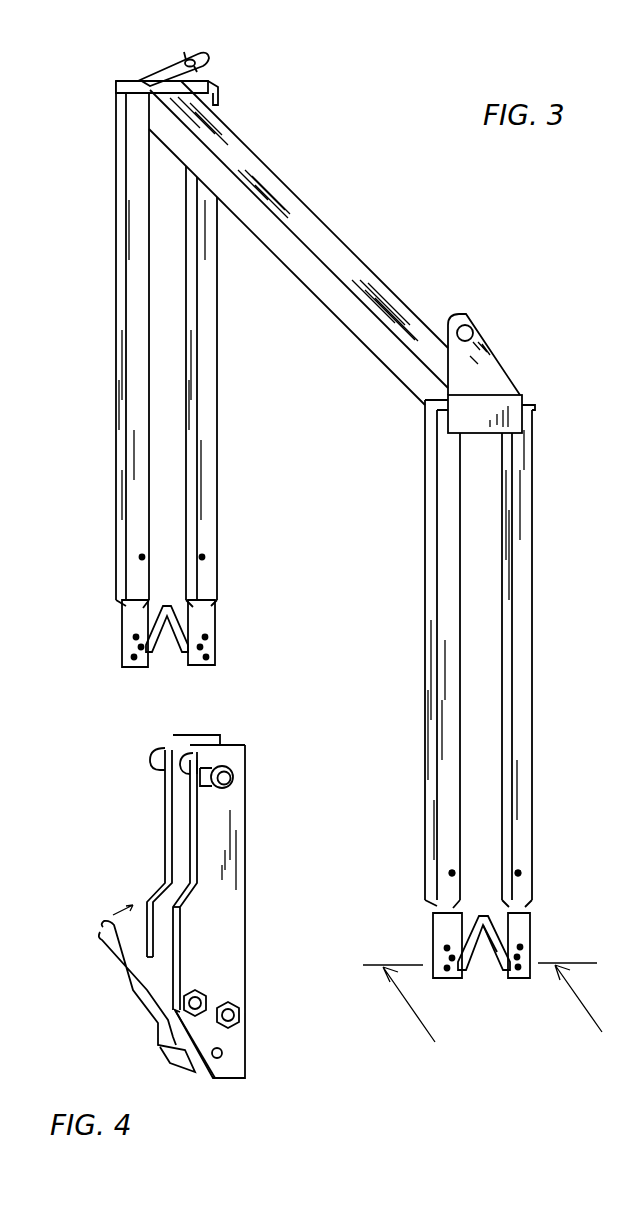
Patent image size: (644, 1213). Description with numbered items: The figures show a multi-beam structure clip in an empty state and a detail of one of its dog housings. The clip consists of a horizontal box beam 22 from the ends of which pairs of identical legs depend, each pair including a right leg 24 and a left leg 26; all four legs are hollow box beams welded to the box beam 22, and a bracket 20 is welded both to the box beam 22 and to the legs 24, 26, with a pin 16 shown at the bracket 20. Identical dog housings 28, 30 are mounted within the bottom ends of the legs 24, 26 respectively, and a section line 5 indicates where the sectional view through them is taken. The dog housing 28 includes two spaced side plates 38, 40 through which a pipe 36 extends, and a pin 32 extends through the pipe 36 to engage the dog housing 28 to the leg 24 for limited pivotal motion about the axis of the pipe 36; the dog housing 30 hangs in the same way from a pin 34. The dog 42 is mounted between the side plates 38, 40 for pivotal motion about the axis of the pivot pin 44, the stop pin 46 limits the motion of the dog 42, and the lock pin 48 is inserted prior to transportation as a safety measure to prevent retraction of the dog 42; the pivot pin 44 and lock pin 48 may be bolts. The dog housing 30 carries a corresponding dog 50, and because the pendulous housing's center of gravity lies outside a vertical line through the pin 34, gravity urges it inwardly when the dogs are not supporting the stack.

In FIG. 3, the section line 5- 5 is at (482, 1008).
In FIG. 3, the pivot pin 16 is at (197, 62).
In FIG. 3, the bracket 20 is at (164, 72).
In FIG. 3, the horizontal box beam 22 is at (330, 232).
In FIG. 3, the right leg 24 is at (205, 437).
In FIG. 3, the left leg 26 is at (128, 437).
In FIG. 3, the dog housing 28 is at (530, 947).
In FIG. 4, the dog housing 28 is at (171, 907).
In FIG. 3, the dog housing 30 is at (433, 948).
In FIG. 3, the pin 32 is at (518, 873).
In FIG. 3, the pin 34 is at (452, 873).
In FIG. 4, the pipe 36 is at (235, 775).
In FIG. 4, the side plate 38 is at (238, 840).
In FIG. 4, the side plate 40 is at (172, 818).
In FIG. 3, the dog 42 is at (497, 943).
In FIG. 4, the dog 42 is at (92, 935).
In FIG. 4, the pivot pin 44 is at (207, 1000).
In FIG. 4, the stop pin 46 is at (240, 1015).
In FIG. 4, the lock pin 48 is at (222, 1053).
In FIG. 3, the dog 50 is at (483, 916).